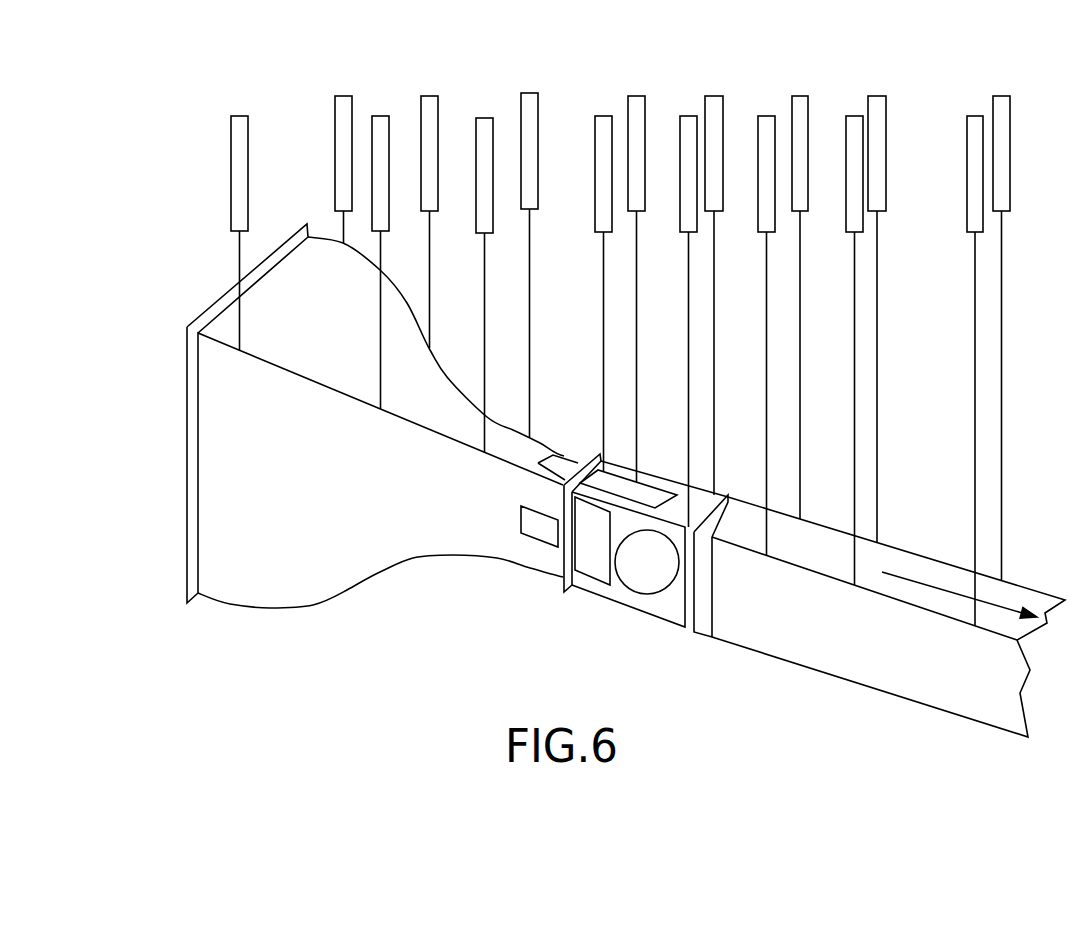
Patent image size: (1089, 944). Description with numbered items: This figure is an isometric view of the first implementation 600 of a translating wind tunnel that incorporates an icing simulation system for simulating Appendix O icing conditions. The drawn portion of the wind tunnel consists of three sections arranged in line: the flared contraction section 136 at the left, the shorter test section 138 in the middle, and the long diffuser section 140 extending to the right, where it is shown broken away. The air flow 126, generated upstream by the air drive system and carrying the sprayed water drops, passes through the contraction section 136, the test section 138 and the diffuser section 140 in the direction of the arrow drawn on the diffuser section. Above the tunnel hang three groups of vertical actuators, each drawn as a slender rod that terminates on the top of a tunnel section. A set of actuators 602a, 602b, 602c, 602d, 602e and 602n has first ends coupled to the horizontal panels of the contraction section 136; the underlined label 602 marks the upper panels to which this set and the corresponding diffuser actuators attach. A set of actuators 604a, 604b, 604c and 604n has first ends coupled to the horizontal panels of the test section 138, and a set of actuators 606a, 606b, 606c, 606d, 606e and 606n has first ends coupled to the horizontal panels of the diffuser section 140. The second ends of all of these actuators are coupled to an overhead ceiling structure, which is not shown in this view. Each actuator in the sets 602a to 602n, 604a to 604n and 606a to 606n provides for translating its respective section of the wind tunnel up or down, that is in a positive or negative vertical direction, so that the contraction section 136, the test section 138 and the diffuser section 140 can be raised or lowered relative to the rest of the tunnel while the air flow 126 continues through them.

The antenna assembly 600 is at (156, 149).
The contraction section 136 is at (392, 504).
The test section 138 is at (645, 568).
The diffuser section 140 is at (905, 651).
The air flow 126 is at (988, 590).
The sensor array section 602 is at (333, 325).
The actuator 602a is at (240, 116).
The actuator 602b is at (344, 96).
The actuator 602c is at (380, 116).
The actuator 602d is at (430, 96).
The actuator 602e is at (484, 118).
The actuator 602n is at (530, 93).
The actuator 604a is at (604, 116).
The actuator 604b is at (636, 96).
The actuator 604c is at (688, 116).
The actuator 604n is at (714, 96).
The actuator 606a is at (766, 116).
The actuator 606b is at (800, 96).
The actuator 606c is at (854, 116).
The actuator 606d is at (877, 96).
The actuator 606e is at (975, 116).
The actuator 606n is at (1002, 96).